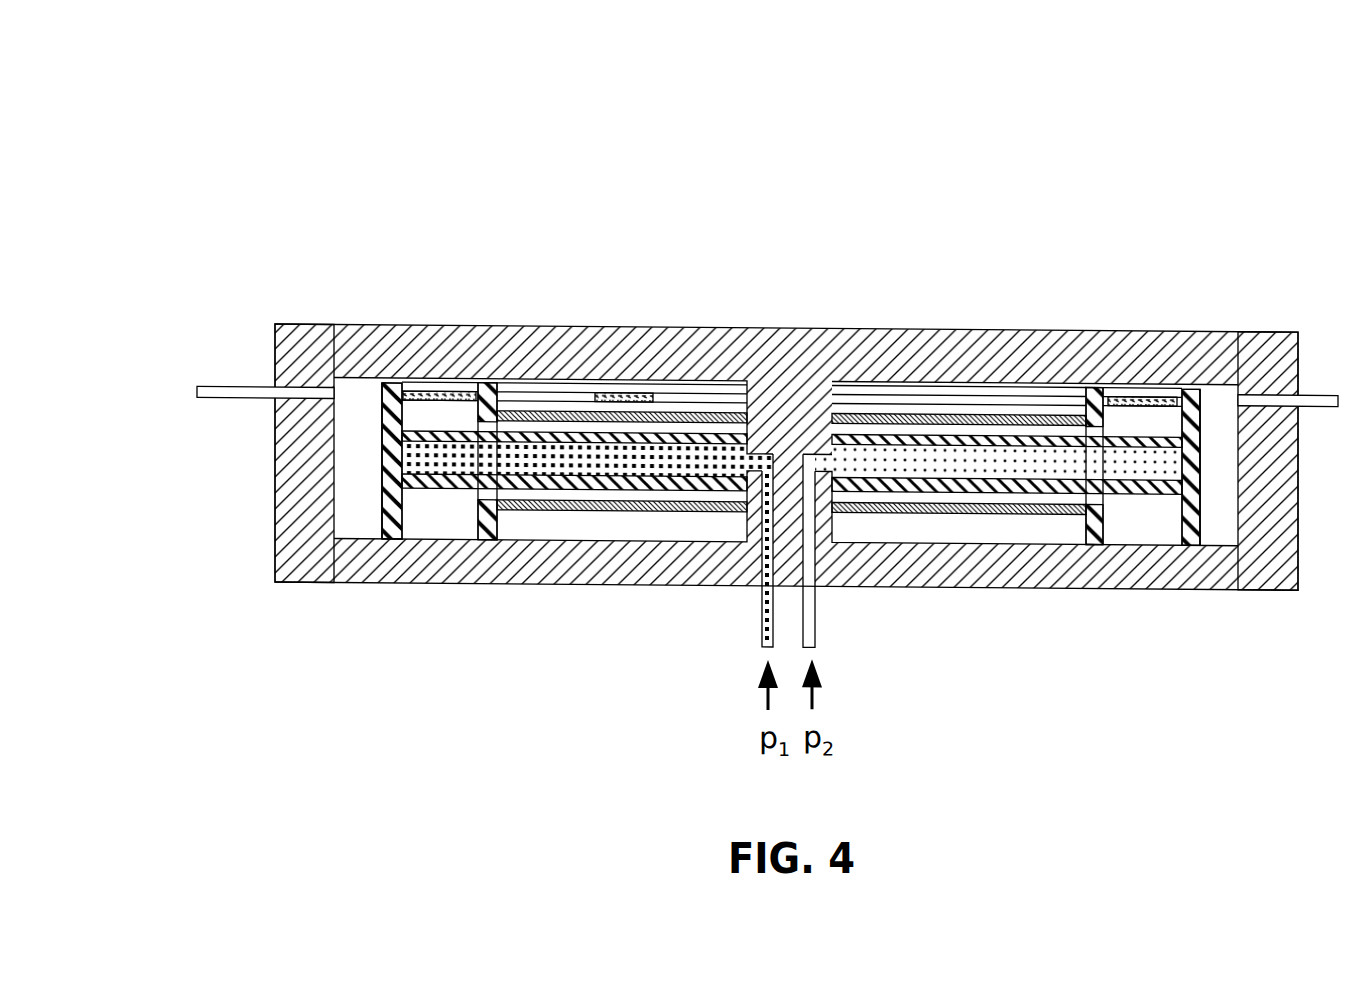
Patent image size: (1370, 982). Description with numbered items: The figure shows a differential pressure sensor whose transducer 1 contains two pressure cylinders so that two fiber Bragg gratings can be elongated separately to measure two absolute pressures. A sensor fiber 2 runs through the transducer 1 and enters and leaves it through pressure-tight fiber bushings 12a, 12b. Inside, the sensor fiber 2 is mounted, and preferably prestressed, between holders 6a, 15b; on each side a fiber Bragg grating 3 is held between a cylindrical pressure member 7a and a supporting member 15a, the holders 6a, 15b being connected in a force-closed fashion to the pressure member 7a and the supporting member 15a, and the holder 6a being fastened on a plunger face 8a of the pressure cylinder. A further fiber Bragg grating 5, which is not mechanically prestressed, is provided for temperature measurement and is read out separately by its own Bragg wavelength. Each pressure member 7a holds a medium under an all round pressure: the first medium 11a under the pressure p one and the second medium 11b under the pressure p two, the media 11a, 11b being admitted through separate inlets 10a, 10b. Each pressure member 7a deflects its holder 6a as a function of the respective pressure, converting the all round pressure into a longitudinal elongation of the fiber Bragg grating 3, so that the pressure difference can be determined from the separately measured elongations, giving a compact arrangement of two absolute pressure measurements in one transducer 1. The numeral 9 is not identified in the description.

The transducer 1 is at (275, 100).
The sensor fiber 2 is at (231, 392).
The fiber Bragg grating 3 is at (437, 394).
The fiber Bragg grating 5 is at (622, 392).
The holder 6a is at (390, 382).
The pressure member 7a is at (585, 434).
The plunger face 8a is at (380, 472).
The housing 9 is at (300, 582).
The inlet 10a is at (760, 599).
The inlet 10b is at (813, 598).
The first medium 11a is at (574, 457).
The second medium 11b is at (1017, 454).
The fiber bushing 12a is at (1267, 389).
The fiber bushing 12b is at (303, 385).
The supporting member 15a is at (533, 410).
The holder 15b is at (488, 390).